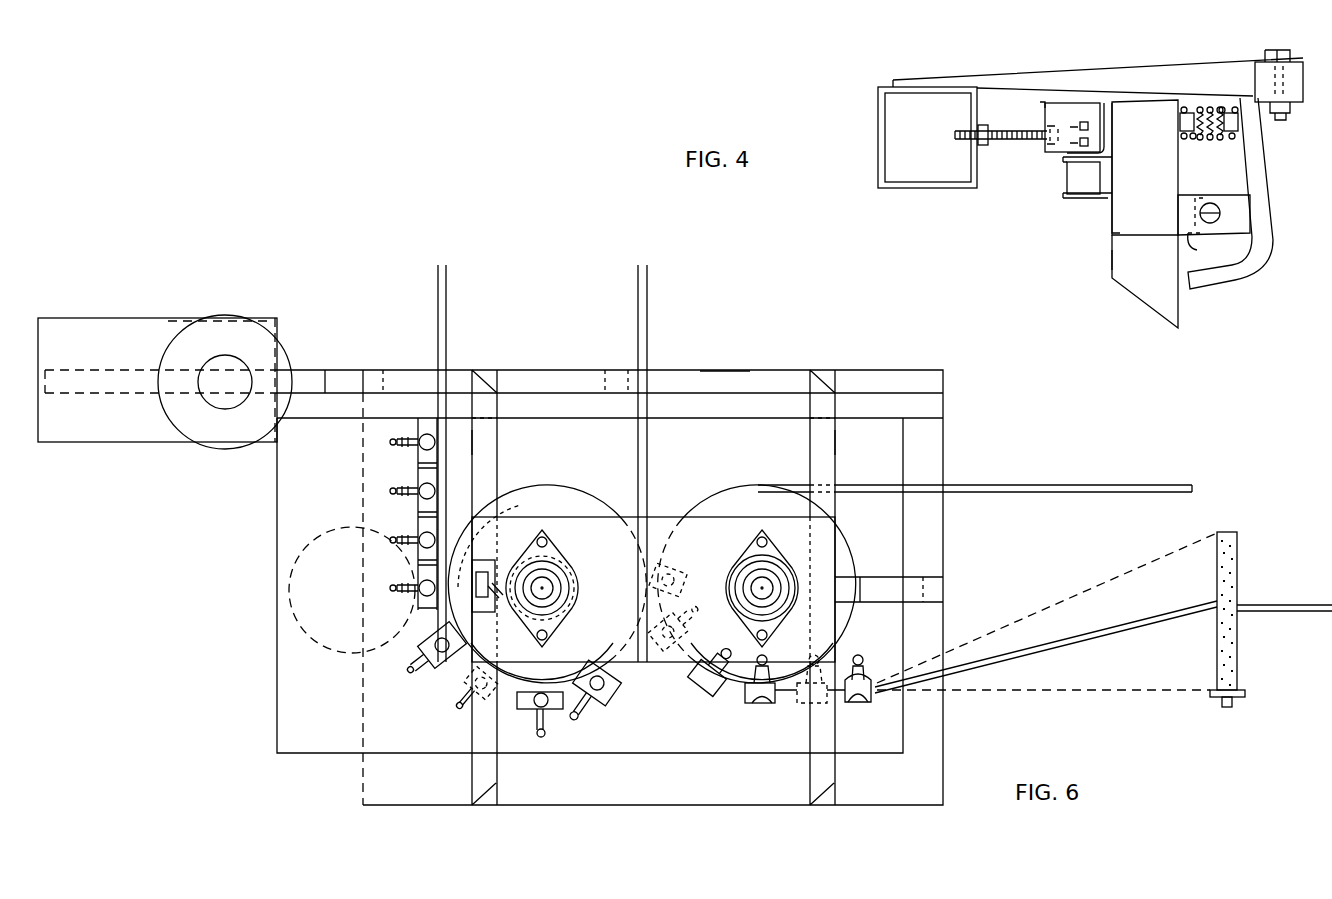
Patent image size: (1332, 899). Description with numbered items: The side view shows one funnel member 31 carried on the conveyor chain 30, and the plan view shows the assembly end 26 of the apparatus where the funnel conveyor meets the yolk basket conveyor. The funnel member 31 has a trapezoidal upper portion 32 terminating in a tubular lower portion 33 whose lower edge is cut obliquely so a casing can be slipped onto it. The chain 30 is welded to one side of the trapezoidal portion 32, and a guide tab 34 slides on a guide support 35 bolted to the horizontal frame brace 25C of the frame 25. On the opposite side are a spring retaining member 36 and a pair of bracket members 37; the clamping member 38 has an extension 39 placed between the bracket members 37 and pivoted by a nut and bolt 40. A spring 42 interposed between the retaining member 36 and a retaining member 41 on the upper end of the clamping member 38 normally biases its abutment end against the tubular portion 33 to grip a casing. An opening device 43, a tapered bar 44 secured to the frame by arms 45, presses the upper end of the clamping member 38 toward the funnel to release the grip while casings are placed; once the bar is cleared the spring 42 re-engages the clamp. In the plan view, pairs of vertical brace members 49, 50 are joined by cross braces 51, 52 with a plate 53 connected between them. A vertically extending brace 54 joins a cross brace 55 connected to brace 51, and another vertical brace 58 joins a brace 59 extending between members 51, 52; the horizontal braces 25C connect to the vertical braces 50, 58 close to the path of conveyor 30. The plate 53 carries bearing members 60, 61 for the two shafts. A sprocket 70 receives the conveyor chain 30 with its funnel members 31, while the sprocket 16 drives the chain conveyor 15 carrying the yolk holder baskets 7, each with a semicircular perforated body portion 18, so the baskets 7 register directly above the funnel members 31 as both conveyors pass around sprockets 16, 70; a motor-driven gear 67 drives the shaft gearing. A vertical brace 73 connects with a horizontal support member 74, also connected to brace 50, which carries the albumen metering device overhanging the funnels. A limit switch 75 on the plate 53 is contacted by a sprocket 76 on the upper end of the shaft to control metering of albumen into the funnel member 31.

In FIG. 6, the yolk holder basket 7 is at (1248, 657).
In FIG. 6, the chain conveyor 15 is at (1320, 604).
In FIG. 6, the sprocket 16 is at (858, 557).
In FIG. 6, the semicircular perforated body portion 18 is at (1217, 582).
In FIG. 4, the frame 25 is at (923, 192).
In FIG. 4, the horizontal frame brace 25C is at (878, 106).
In FIG. 6, the assembly end 26 is at (340, 818).
In FIG. 4, the conveyor chain 30 is at (1063, 179).
In FIG. 6, the conveyor chain 30 is at (650, 318).
In FIG. 4, the funnel member 31 is at (1063, 275).
In FIG. 6, the funnel member 31 is at (458, 691).
In FIG. 4, the trapezoidal upper portion 32 is at (1160, 178).
In FIG. 6, the trapezoidal upper portion 32 is at (217, 327).
In FIG. 4, the tubular lower portion 33 is at (1160, 283).
In FIG. 4, the guide tab 34 is at (1072, 101).
In FIG. 4, the guide support 35 is at (1057, 117).
In FIG. 4, the spring retaining member 36 is at (1187, 112).
In FIG. 4, the bracket members 37 is at (1207, 230).
In FIG. 4, the clamping member 38 is at (1217, 278).
In FIG. 4, the extension 39 is at (1242, 212).
In FIG. 4, the nut and bolt 40 is at (1208, 203).
In FIG. 4, the spring retaining member 41 is at (1230, 112).
In FIG. 4, the spring 42 is at (1205, 132).
In FIG. 4, the opening device 43 is at (1133, 64).
In FIG. 4, the tapered bar 44 is at (1305, 82).
In FIG. 4, the arms 45 is at (1011, 75).
In FIG. 6, the vertical brace members 49 is at (823, 372).
In FIG. 6, the vertical brace members 50 is at (486, 372).
In FIG. 6, the cross brace 51 is at (828, 443).
In FIG. 6, the cross brace 52 is at (488, 443).
In FIG. 6, the plate 53 is at (663, 527).
In FIG. 6, the vertically extending brace 54 is at (937, 587).
In FIG. 6, the cross brace 55 is at (882, 593).
In FIG. 6, the vertical brace 58 is at (615, 376).
In FIG. 6, the brace 59 is at (723, 378).
In FIG. 6, the bearing member 60 is at (557, 544).
In FIG. 6, the bearing member 61 is at (733, 558).
In FIG. 6, the gear 67 is at (343, 523).
In FIG. 6, the sprocket 70 is at (583, 500).
In FIG. 6, the vertical brace 73 is at (370, 377).
In FIG. 6, the horizontal support member 74 is at (325, 377).
In FIG. 6, the limit switch 75 is at (487, 612).
In FIG. 6, the sprocket 76 is at (578, 607).